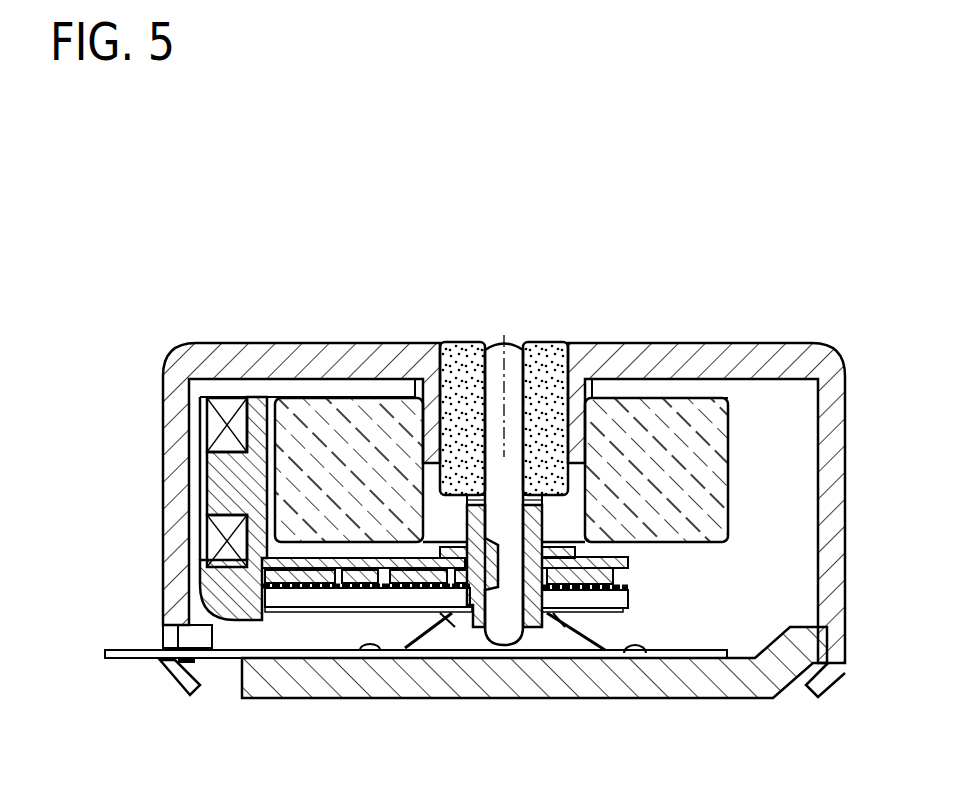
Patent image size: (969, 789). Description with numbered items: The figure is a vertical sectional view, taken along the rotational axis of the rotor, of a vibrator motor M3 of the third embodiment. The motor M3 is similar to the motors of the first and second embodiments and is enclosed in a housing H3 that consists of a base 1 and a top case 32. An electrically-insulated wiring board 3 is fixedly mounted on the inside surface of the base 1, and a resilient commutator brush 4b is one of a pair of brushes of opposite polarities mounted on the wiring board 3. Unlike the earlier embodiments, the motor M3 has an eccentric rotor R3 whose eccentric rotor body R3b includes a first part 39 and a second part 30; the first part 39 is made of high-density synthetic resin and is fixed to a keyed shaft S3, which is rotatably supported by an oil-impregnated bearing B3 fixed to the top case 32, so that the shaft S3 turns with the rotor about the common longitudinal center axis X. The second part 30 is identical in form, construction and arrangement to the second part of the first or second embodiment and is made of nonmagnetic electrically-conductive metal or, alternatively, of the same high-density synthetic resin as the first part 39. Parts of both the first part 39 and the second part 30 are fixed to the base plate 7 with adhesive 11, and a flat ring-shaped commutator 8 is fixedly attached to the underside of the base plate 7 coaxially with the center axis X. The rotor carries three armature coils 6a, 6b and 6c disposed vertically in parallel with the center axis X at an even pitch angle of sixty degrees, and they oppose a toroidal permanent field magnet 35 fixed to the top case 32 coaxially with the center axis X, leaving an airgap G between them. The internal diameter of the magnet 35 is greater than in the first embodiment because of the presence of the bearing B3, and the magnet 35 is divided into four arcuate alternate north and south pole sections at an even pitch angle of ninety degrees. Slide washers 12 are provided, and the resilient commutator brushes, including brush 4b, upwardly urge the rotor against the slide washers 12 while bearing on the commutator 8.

The base 1 is at (737, 678).
The wiring board 3 is at (688, 658).
The commutator brush 4b is at (603, 614).
The armature coil 6a is at (227, 425).
The armature coil 6b is at (176, 355).
The armature coil 6c is at (227, 541).
The base plate 7 is at (277, 598).
The commutator 8 is at (580, 640).
The adhesive 11 is at (303, 588).
The slide washers 12 is at (540, 503).
The second part 30 is at (183, 690).
The top case 32 is at (822, 365).
The permanent field magnet 35 is at (350, 427).
The first part 39 is at (212, 598).
The vibrator motor M3 is at (160, 355).
The eccentric rotor R3 is at (467, 506).
The eccentric rotor body R3b is at (473, 630).
The keyed shaft S3 is at (485, 440).
The center axis X is at (505, 335).
The oil-impregnated bearing B3 is at (543, 365).
The airgap G is at (270, 427).
The housing H3 is at (526, 525).